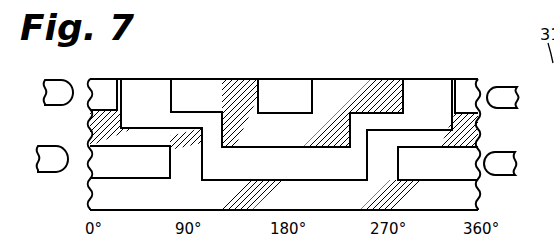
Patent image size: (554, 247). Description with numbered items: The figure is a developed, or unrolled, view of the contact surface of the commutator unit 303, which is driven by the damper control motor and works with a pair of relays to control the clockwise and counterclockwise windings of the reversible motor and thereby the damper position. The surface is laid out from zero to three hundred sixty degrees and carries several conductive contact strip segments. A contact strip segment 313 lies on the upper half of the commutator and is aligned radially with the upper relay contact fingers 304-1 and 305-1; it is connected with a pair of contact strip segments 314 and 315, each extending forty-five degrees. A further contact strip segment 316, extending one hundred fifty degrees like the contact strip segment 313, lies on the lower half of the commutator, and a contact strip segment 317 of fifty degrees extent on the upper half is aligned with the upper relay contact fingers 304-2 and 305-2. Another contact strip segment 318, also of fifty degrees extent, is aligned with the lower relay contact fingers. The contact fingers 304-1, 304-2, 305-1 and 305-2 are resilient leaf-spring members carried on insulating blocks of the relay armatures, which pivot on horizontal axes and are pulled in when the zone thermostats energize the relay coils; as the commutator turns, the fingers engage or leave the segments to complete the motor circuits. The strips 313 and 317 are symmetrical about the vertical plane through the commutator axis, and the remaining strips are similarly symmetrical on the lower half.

The commutator unit 303 is at (247, 75).
The contact finger 304-1 is at (54, 165).
The contact finger 304-2 is at (59, 93).
The contact finger 305-1 is at (503, 165).
The contact finger 305-2 is at (502, 90).
The contact strip segment 313 is at (301, 167).
The contact strip segment 314 is at (155, 87).
The contact strip segment 315 is at (420, 90).
The contact strip segment 316 is at (138, 165).
The contact strip segment 317 is at (292, 82).
The contact strip segment 318 is at (105, 87).